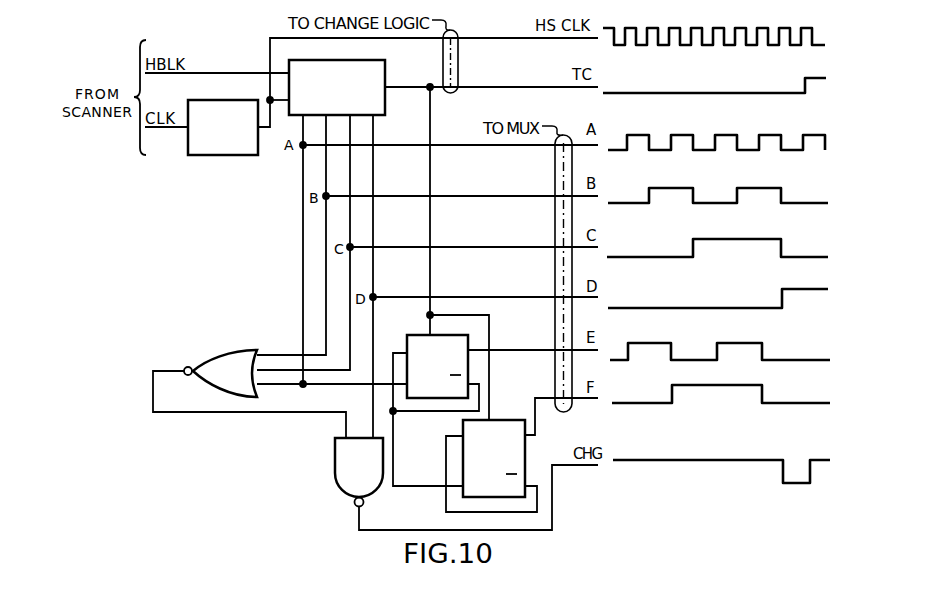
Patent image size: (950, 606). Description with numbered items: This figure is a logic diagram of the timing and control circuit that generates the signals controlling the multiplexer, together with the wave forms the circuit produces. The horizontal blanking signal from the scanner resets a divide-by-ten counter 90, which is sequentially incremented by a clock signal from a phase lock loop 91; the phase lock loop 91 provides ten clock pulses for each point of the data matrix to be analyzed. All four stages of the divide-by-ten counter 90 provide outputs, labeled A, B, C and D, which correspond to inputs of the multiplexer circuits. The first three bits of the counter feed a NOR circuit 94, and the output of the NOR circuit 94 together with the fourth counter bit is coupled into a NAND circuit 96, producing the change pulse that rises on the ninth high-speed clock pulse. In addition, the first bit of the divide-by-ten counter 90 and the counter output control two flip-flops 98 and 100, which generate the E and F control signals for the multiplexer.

The divide-by-ten counter 90 is at (370, 60).
The phase lock loop 91 is at (216, 100).
The NOR circuit 94 is at (233, 349).
The NAND circuit 96 is at (336, 455).
The flip-flop 98 is at (416, 335).
The flip-flop 100 is at (493, 420).